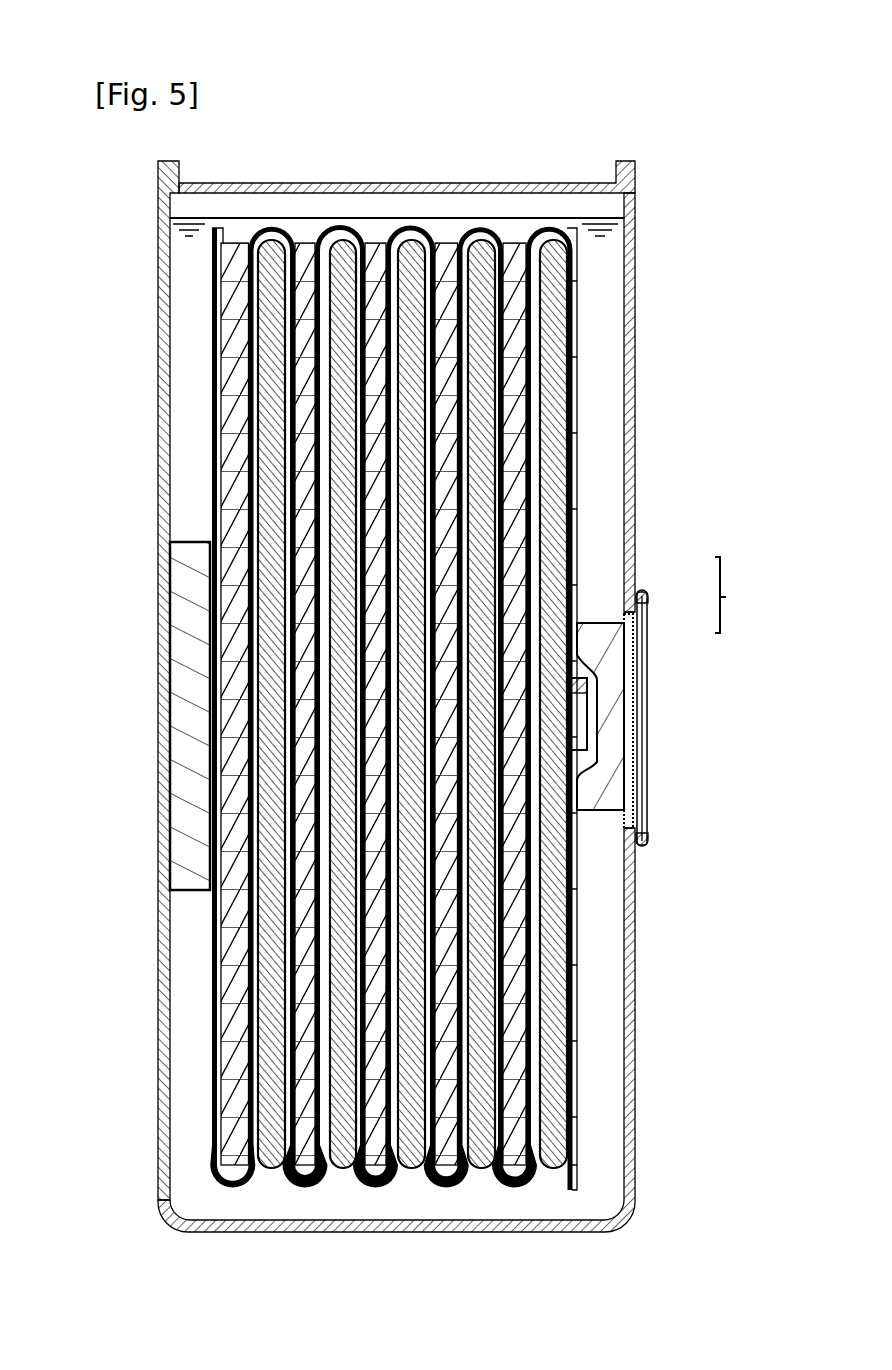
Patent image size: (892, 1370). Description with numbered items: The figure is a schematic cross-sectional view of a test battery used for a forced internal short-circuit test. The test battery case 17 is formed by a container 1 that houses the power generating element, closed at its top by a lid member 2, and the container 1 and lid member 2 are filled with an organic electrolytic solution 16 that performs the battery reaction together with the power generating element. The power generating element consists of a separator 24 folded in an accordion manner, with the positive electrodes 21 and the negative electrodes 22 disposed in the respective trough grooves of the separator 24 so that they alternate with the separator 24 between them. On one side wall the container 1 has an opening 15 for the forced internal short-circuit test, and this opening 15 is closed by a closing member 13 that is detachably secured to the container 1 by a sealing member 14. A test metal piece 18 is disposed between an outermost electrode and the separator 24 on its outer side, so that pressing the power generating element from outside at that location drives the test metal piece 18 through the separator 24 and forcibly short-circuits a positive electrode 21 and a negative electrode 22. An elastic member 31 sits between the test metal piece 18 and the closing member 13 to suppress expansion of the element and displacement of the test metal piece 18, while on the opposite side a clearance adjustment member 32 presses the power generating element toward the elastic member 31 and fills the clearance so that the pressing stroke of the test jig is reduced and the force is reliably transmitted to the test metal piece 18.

The container 1 is at (627, 572).
The lid member 2 is at (373, 189).
The closing member 13 is at (642, 628).
The sealing member 14 is at (638, 600).
The opening 15 is at (635, 688).
The organic electrolytic solution 16 is at (604, 272).
The test battery case 17 is at (735, 595).
The test metal piece 18 is at (572, 720).
The positive electrode 21 is at (556, 414).
The negative electrode 22 is at (512, 447).
The separator 24 is at (570, 372).
The elastic member 31 is at (612, 785).
The clearance adjustment member 32 is at (195, 735).